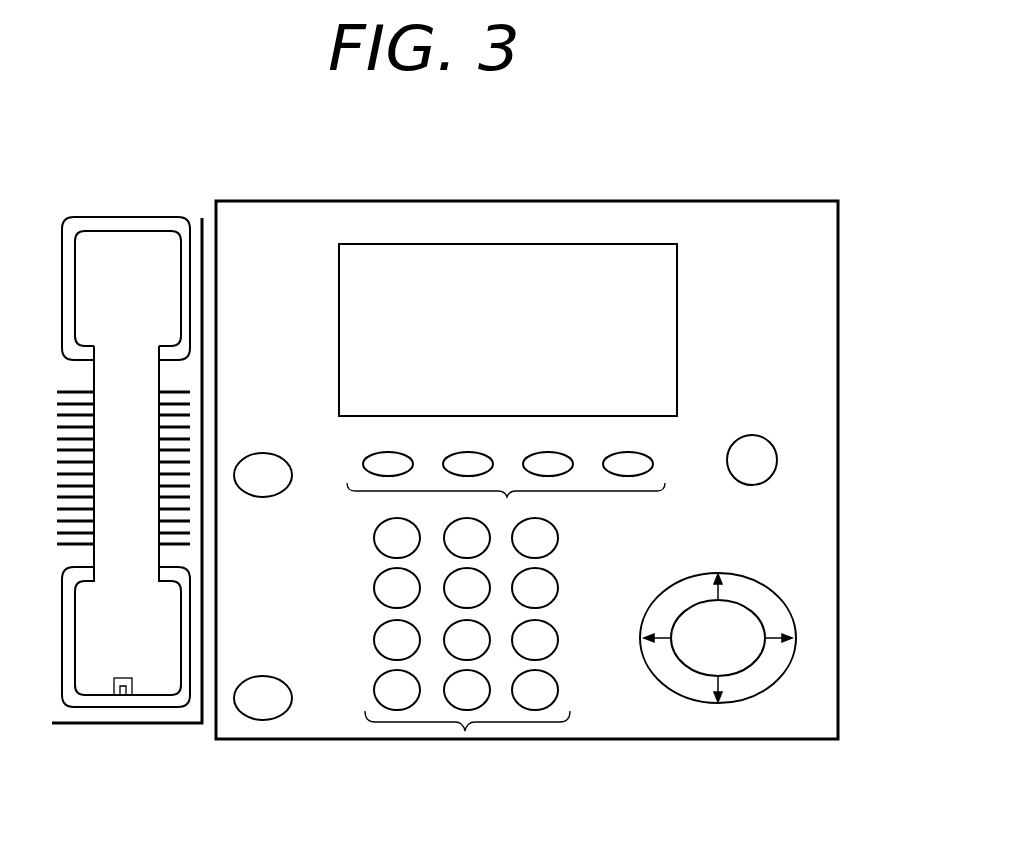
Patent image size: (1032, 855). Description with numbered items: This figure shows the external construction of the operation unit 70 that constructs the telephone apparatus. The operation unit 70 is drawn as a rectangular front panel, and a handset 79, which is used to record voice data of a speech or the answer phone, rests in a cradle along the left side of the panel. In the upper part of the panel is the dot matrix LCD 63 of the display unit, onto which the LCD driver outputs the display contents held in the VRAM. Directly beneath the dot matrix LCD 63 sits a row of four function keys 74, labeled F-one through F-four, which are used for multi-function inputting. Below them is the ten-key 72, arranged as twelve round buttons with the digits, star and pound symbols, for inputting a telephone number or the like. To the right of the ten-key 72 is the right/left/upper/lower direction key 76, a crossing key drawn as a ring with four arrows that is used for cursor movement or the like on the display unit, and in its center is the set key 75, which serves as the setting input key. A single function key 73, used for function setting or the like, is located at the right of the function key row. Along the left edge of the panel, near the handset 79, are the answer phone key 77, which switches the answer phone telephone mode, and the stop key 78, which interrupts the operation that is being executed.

The operation unit 70 is at (453, 142).
The handset 79 is at (90, 217).
The dot matrix LCD 63 is at (678, 262).
The function keys 74 is at (507, 497).
The ten-key 72 is at (465, 733).
The right/left/upper/lower direction key (crossing key) 76 is at (773, 611).
The set key 75 is at (692, 675).
The function key 73 is at (777, 458).
The answer phone key 77 is at (265, 453).
The stop key 78 is at (255, 721).